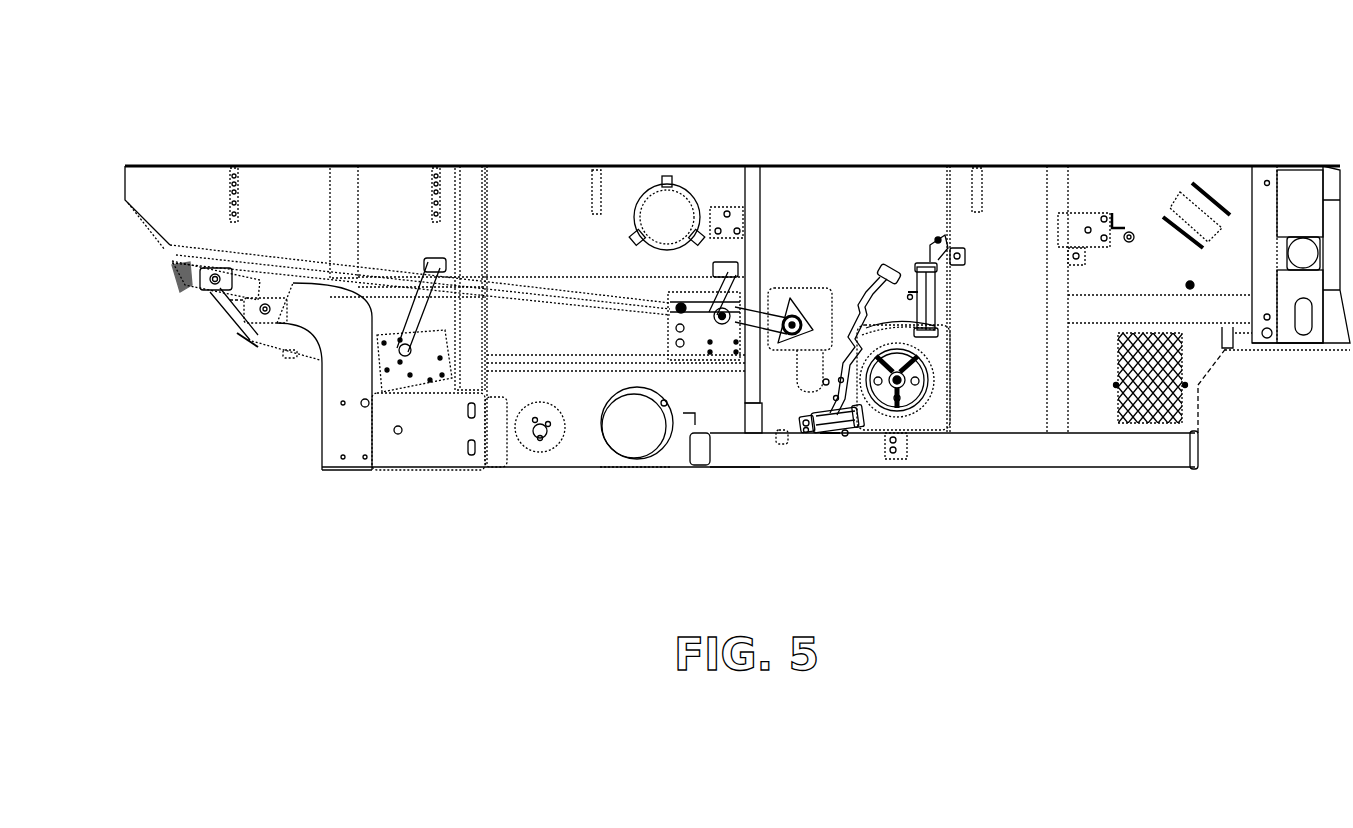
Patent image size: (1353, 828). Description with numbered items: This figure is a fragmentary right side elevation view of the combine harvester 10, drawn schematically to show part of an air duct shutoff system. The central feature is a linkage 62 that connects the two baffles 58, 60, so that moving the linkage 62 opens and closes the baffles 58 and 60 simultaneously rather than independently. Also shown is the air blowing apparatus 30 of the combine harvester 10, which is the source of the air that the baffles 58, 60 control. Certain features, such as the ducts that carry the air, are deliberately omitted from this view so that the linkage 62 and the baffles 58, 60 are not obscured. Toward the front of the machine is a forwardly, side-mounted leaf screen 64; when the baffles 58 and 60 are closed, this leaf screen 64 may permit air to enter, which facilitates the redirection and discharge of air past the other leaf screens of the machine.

The combine harvester 10 is at (1137, 128).
The air blowing apparatus 30 is at (912, 380).
The baffle 58 is at (860, 417).
The baffle 60 is at (895, 282).
The linkage 62 is at (838, 320).
The leaf screen 64 is at (1162, 417).